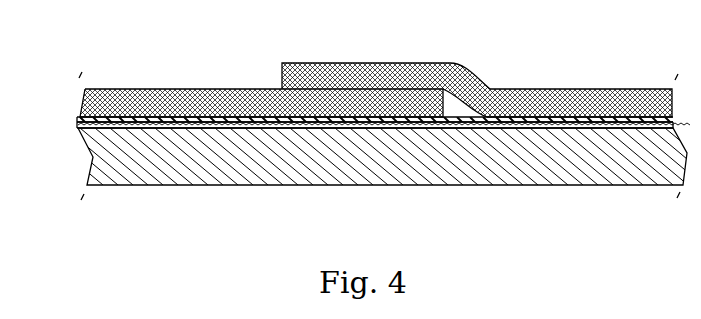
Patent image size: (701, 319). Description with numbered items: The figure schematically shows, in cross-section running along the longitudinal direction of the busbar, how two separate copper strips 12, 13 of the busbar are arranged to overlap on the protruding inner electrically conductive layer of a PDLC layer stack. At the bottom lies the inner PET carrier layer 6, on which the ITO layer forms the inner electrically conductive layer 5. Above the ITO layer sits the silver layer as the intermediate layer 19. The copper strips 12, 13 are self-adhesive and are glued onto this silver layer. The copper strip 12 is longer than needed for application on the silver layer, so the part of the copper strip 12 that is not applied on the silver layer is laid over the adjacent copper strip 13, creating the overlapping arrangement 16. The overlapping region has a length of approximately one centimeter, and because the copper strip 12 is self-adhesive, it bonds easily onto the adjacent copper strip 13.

The copper strip 13 is at (181, 88).
The copper strip 12 is at (545, 88).
The overlapping arrangement 16 is at (282, 46).
The intermediate layer 19 is at (77, 121).
The inner electrically conductive layer 5 is at (77, 127).
The inner PET carrier layer 6 is at (90, 156).